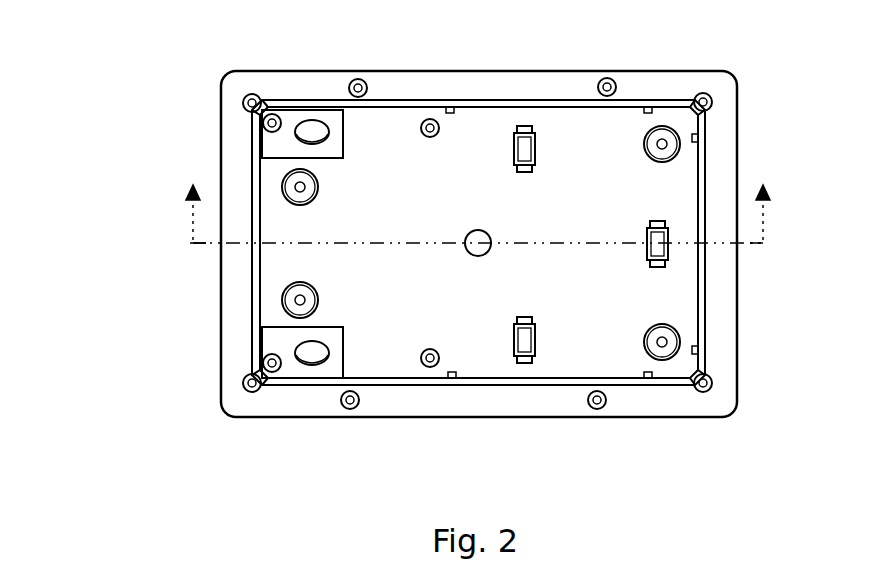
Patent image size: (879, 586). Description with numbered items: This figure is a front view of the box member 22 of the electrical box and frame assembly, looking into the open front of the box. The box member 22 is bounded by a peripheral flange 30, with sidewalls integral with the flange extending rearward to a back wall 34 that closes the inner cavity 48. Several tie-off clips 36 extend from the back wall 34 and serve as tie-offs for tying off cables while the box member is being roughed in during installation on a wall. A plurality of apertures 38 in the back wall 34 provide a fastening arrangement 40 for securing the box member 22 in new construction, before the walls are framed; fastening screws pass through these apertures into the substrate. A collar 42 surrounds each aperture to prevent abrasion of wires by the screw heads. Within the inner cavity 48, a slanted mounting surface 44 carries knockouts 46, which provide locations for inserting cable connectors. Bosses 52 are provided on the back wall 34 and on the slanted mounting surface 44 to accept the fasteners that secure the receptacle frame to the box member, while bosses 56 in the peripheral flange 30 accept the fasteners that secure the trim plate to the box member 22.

The box member 22 is at (143, 82).
The peripheral flange 30 is at (725, 352).
The back wall 34 is at (576, 204).
The tie-off clip 36 is at (536, 339).
The aperture 38 is at (300, 187).
The fastening arrangement 40 is at (321, 195).
The collar 42 is at (300, 300).
The slanted mounting surface 44 is at (335, 333).
The knockout 46 is at (312, 356).
The inner cavity 48 is at (678, 278).
The boss 52 is at (437, 133).
The boss 56 is at (606, 78).